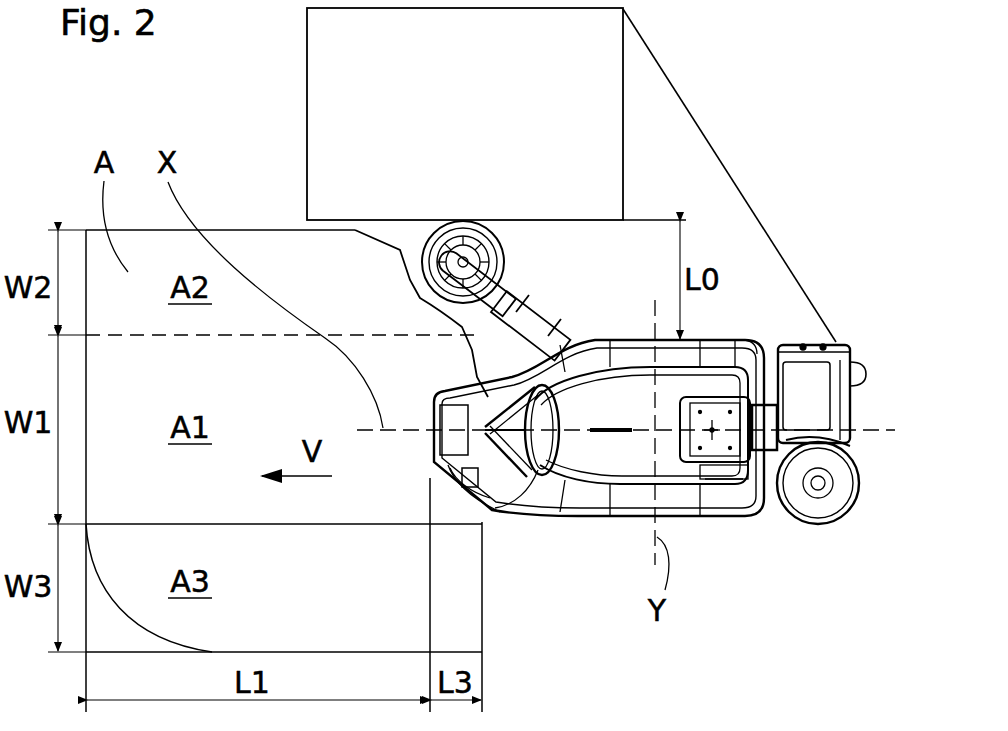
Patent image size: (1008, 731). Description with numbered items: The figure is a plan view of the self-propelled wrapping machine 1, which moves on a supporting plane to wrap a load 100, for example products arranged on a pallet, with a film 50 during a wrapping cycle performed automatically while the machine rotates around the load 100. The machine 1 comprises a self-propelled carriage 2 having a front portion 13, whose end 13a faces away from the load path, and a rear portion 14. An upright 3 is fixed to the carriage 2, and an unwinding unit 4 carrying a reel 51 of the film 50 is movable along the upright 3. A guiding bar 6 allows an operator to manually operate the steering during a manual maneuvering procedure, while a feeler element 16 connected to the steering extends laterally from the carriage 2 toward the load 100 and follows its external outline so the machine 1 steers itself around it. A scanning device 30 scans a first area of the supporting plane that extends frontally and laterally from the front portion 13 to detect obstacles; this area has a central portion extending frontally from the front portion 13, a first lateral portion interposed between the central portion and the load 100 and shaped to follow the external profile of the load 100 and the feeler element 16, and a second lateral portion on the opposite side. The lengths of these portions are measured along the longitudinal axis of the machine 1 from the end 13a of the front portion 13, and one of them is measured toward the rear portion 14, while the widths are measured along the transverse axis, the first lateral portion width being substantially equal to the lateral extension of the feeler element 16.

The self-propelled wrapping machine 1 is at (860, 122).
The self-propelled carriage 2 is at (668, 465).
The upright 3 is at (752, 487).
The unwinding unit 4 is at (852, 330).
The guiding bar 6 is at (590, 338).
The front portion 13 is at (448, 488).
The end of the front portion 13a is at (420, 415).
The rear portion 14 is at (728, 363).
The feeler element 16 is at (508, 303).
The scanning device 30 is at (513, 513).
The film 50 is at (673, 88).
The reel 51 is at (840, 493).
The load 100 is at (436, 130).